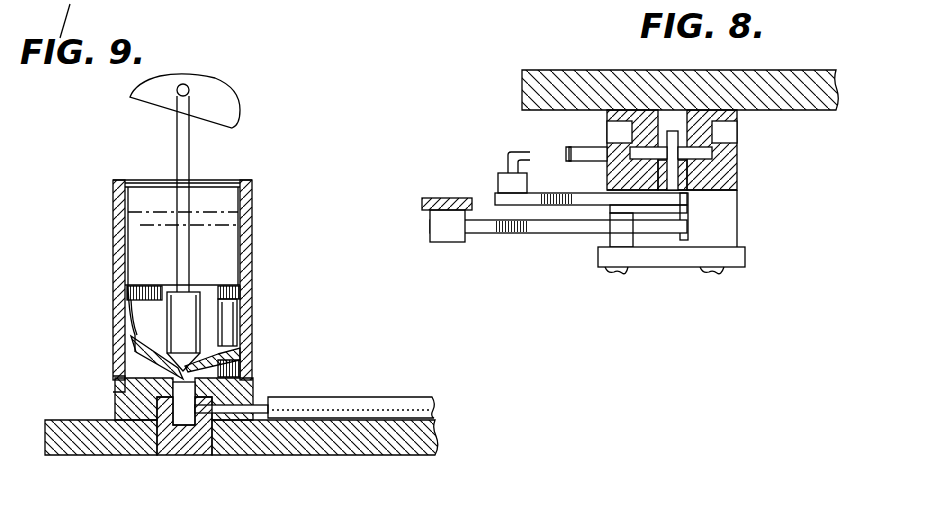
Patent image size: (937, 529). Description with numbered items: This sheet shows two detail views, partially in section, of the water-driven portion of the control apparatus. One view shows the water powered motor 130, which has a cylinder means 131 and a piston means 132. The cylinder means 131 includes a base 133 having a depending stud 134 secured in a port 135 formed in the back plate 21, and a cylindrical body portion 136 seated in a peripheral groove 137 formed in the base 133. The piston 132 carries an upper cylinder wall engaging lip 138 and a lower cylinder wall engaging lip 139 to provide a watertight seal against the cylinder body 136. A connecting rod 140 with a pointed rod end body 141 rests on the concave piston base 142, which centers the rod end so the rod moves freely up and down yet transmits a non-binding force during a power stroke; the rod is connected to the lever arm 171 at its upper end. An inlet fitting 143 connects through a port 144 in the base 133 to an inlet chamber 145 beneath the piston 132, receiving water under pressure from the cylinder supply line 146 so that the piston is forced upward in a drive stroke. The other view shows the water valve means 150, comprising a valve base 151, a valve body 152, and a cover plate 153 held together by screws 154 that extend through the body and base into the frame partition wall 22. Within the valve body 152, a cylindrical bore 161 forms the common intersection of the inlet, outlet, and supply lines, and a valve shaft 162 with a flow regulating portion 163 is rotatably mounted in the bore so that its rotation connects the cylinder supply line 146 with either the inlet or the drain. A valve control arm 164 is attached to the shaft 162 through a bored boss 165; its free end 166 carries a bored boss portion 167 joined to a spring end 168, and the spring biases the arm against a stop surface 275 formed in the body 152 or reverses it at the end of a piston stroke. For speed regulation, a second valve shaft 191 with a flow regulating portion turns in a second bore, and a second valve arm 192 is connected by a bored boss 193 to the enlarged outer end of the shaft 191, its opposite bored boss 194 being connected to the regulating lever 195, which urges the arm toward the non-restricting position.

In FIG. 9, the back plate 21 is at (396, 432).
In FIG. 8, the partition wall 22 is at (582, 78).
In FIG. 9, the water powered motor 130 is at (260, 176).
In FIG. 9, the cylinder means 131 is at (248, 230).
In FIG. 9, the piston means 132 is at (237, 325).
In FIG. 9, the base 133 is at (116, 394).
In FIG. 9, the depending stud 134 is at (184, 440).
In FIG. 9, the port 135 is at (164, 444).
In FIG. 9, the cylindrical body portion 136 is at (122, 314).
In FIG. 9, the peripheral groove 137 is at (118, 380).
In FIG. 9, the upper cylinder wall engaging lip 138 is at (228, 290).
In FIG. 9, the lower cylinder wall engaging lip 139 is at (240, 378).
In FIG. 9, the connecting rod 140 is at (177, 158).
In FIG. 9, the pointed rod end body 141 is at (167, 294).
In FIG. 9, the piston base 142 is at (168, 342).
In FIG. 9, the inlet fitting 143 is at (250, 404).
In FIG. 9, the port 144 is at (212, 414).
In FIG. 9, the inlet chamber 145 is at (178, 404).
In FIG. 9, the cylinder supply line 146 is at (362, 398).
In FIG. 8, the cylinder supply line 146 is at (567, 150).
In FIG. 8, the water valve means 150 is at (770, 228).
In FIG. 8, the valve base 151 is at (738, 118).
In FIG. 8, the valve body 152 is at (738, 136).
In FIG. 8, the cover plate 153 is at (746, 250).
In FIG. 8, the screws 154 is at (603, 266).
In FIG. 8, the cylindrical bore 161 is at (666, 186).
In FIG. 8, the valve shaft 162 is at (720, 154).
In FIG. 8, the flow regulating portion 163 is at (636, 140).
In FIG. 8, the valve control arm 164 is at (556, 178).
In FIG. 8, the bored boss 165 is at (688, 200).
In FIG. 8, the free end 166 is at (494, 198).
In FIG. 8, the bored boss portion 167 is at (498, 180).
In FIG. 8, the spring end 168 is at (508, 156).
In FIG. 9, the lever arm 171 is at (222, 98).
In FIG. 8, the second valve shaft 191 is at (692, 222).
In FIG. 8, the second valve arm 192 is at (574, 234).
In FIG. 8, the bored boss 193 is at (654, 252).
In FIG. 8, the bored boss 194 is at (432, 246).
In FIG. 8, the regulating lever 195 is at (422, 199).
In FIG. 8, the stop surface 275 is at (608, 208).